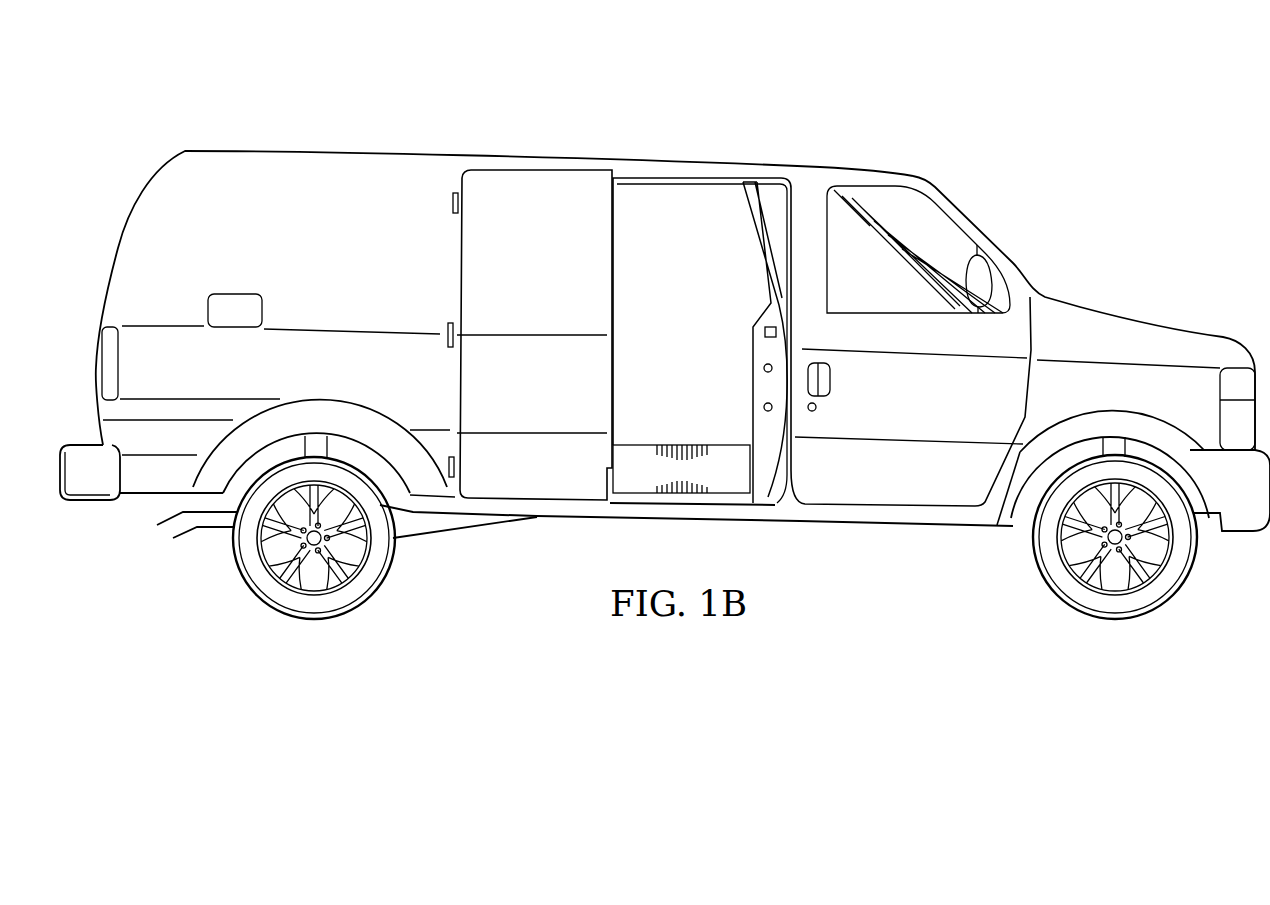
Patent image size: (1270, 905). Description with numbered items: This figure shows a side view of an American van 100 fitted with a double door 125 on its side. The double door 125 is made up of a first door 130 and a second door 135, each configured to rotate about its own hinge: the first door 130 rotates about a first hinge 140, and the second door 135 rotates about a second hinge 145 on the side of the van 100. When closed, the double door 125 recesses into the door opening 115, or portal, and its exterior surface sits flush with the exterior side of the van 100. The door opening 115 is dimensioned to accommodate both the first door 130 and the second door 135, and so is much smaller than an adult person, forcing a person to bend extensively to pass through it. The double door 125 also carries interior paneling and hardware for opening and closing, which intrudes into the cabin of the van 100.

The van 100 is at (900, 76).
The door opening 115 is at (683, 207).
The double door 125 is at (522, 131).
The first door 130 is at (758, 242).
The second door 135 is at (460, 253).
The first hinge 140 is at (780, 503).
The second hinge 145 is at (448, 340).